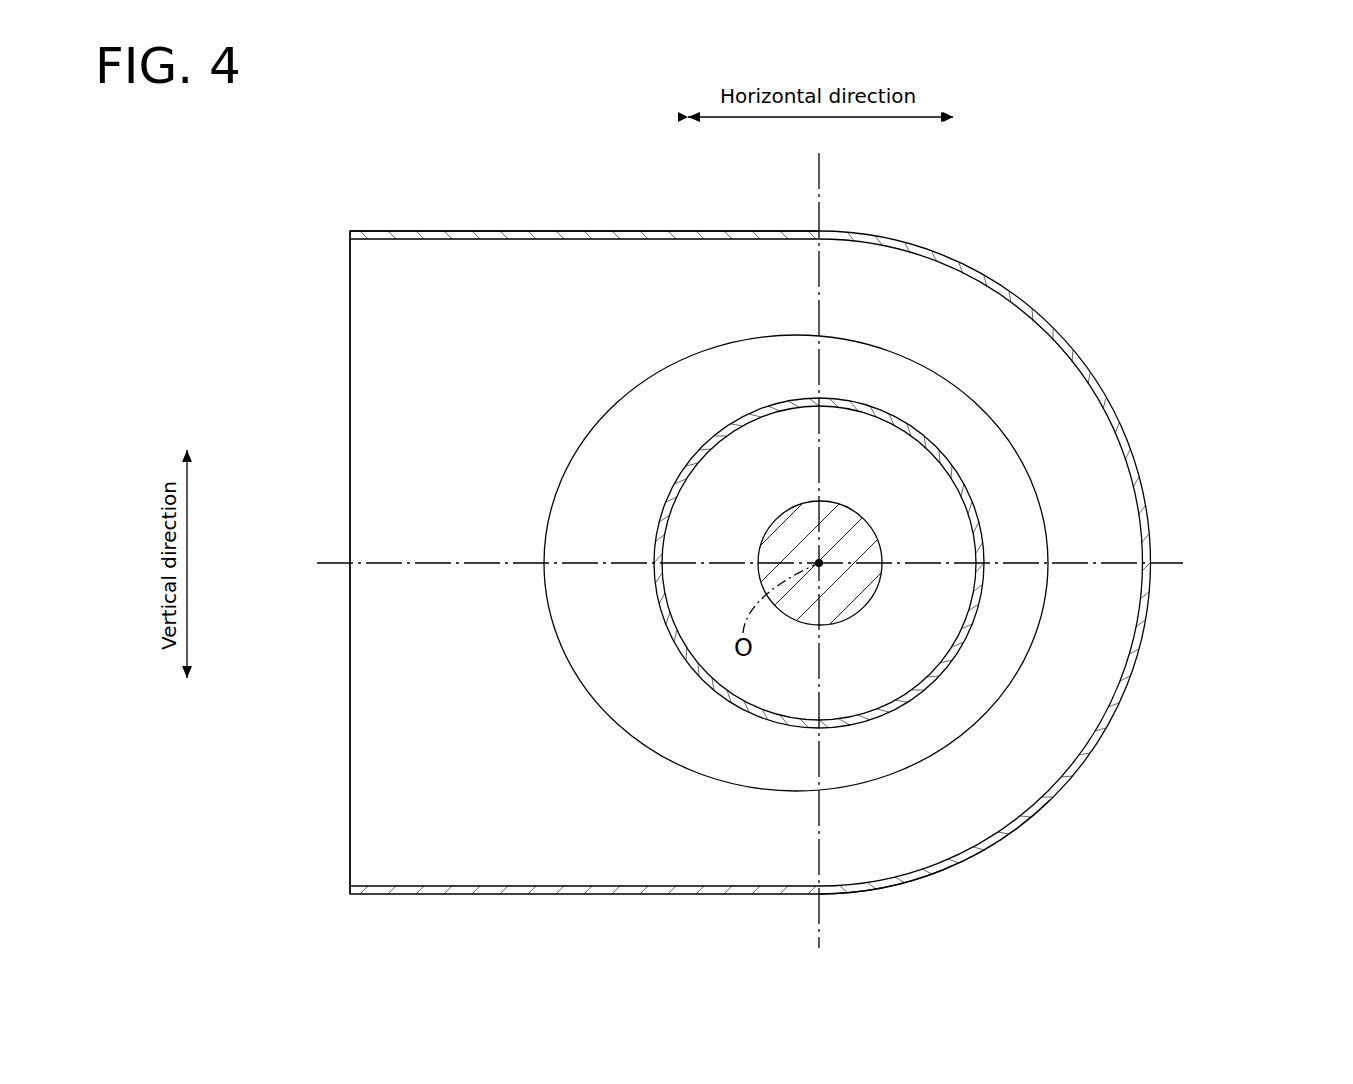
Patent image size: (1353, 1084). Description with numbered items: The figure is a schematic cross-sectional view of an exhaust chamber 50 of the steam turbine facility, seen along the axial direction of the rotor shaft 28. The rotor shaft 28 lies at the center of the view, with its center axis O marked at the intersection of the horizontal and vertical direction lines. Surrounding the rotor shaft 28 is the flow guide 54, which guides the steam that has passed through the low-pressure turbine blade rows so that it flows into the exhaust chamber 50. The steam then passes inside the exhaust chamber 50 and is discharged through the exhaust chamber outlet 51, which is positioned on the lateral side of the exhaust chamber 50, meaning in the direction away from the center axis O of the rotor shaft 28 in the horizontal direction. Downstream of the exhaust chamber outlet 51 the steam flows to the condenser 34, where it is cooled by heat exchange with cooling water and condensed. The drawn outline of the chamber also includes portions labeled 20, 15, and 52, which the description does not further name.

The condenser 34 is at (785, 529).
The exhaust chamber 50 is at (914, 242).
The top wall 20 is at (738, 231).
The exhaust chamber outlet 51 is at (350, 482).
The bottom wall 15 is at (978, 856).
The flow guide 54 is at (980, 422).
The inner ring 52 is at (767, 717).
The rotor shaft 28 is at (863, 533).